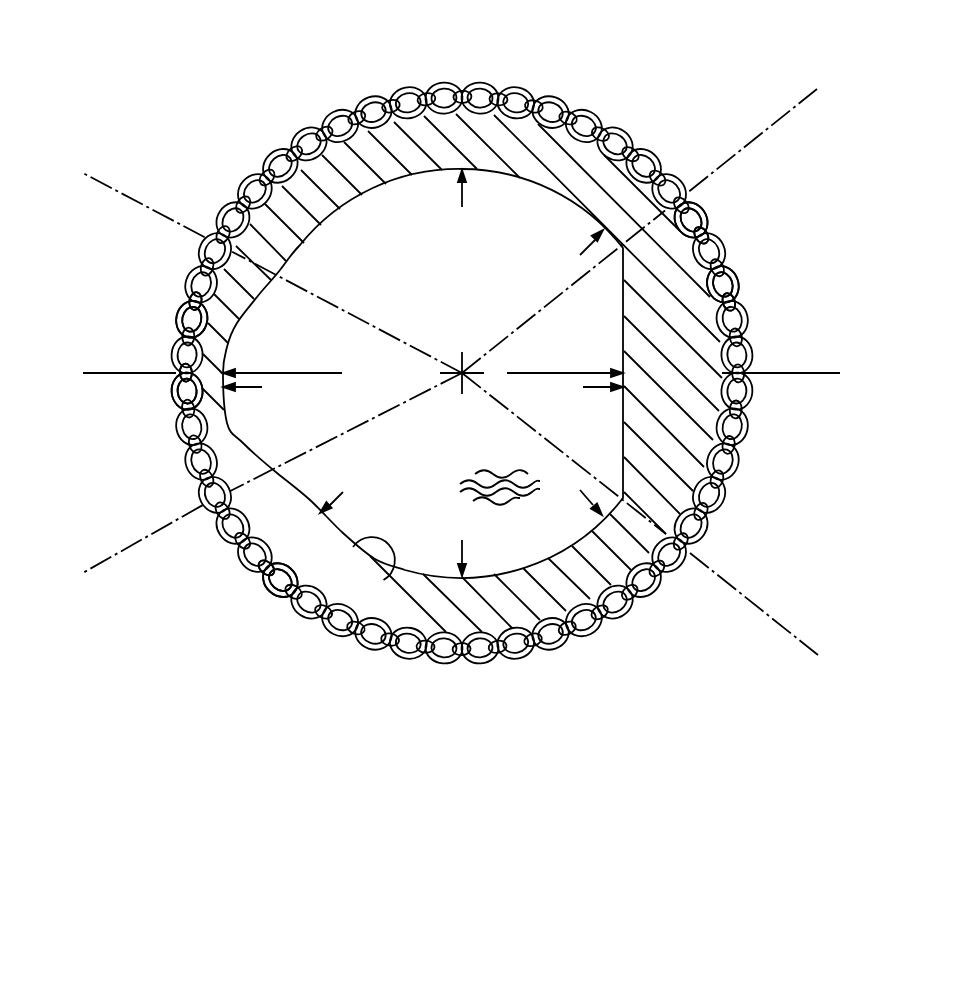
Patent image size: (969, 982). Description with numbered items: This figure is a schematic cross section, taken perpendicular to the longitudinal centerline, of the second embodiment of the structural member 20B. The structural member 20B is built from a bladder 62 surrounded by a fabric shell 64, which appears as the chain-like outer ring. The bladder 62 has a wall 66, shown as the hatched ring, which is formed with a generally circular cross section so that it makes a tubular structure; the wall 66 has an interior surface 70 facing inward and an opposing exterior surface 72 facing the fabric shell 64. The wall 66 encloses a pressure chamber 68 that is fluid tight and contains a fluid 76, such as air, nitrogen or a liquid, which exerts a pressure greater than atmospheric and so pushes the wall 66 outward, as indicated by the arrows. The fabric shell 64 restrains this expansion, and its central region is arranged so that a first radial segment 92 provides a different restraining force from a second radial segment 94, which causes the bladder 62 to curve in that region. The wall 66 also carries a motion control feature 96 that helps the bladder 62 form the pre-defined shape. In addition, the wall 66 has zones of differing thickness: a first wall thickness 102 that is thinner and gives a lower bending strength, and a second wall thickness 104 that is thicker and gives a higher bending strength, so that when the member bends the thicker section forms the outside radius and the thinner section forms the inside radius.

The structural member 20B is at (308, 111).
The fabric shell 64 is at (495, 85).
The bladder 62 is at (712, 219).
The first radial segment 92 is at (173, 322).
The motion control feature 96 is at (178, 410).
The exterior surface 72 is at (267, 597).
The pressure chamber 68 is at (510, 260).
The interior surface 70 is at (385, 588).
The wall 66 is at (593, 578).
The fluid 76 is at (512, 498).
The second radial segment 94 is at (462, 373).
The first wall thickness 102 is at (122, 373).
The second wall thickness 104 is at (786, 373).